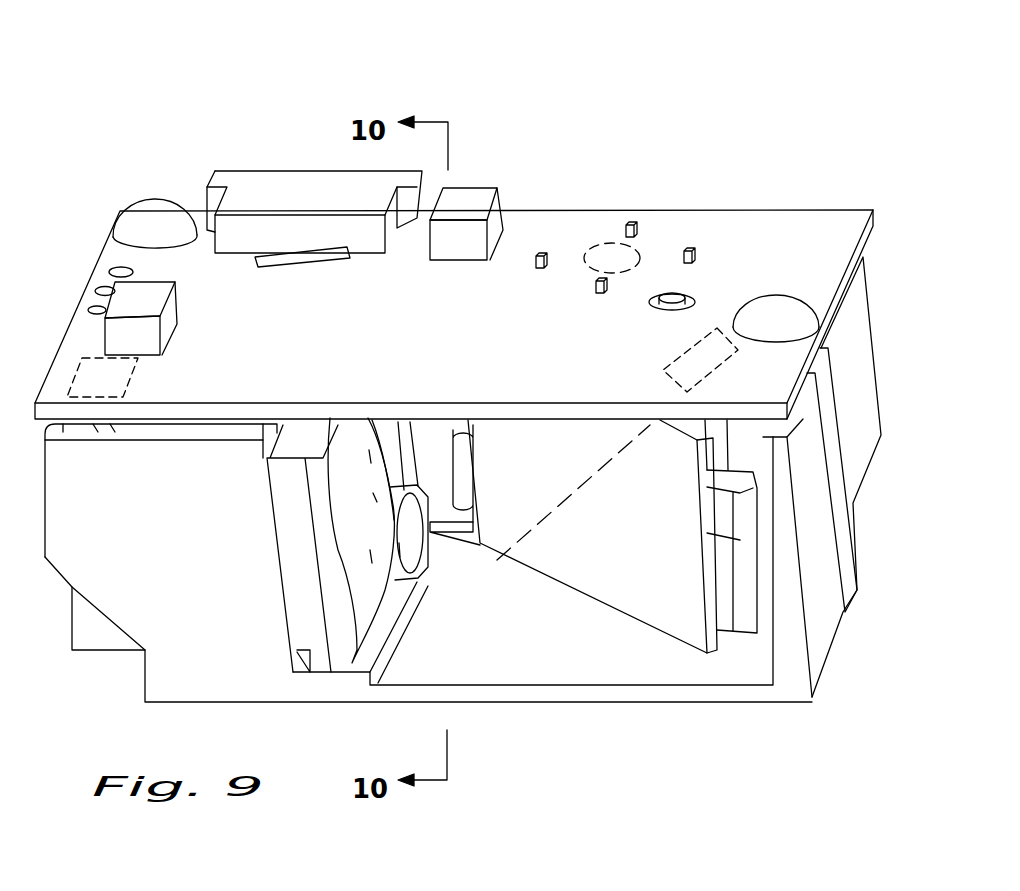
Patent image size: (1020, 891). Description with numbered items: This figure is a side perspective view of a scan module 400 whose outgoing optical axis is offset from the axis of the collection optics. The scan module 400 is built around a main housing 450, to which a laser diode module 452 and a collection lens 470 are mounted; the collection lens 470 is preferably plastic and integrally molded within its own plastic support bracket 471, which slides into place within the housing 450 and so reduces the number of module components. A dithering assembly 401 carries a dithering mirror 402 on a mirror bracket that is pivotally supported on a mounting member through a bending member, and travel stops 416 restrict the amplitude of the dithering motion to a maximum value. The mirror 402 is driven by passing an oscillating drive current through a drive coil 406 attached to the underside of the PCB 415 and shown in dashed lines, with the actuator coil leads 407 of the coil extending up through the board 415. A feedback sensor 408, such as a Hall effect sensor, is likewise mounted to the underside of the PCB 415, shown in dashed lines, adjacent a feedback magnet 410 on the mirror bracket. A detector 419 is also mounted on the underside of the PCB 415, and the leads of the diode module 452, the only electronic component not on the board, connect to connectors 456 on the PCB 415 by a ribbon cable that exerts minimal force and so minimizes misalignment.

The scan module 400 is at (428, 72).
The dithering assembly 401 is at (537, 571).
The dithering mirror 402 is at (598, 533).
The drive coil 406 is at (588, 263).
The actuator coil leads 407 is at (600, 279).
The feedback sensor 408 is at (685, 352).
The feedback magnet 410 is at (690, 435).
The PCB 415 is at (815, 225).
The travel stops 416 is at (727, 513).
The detector 419 is at (128, 381).
The main housing 450 is at (536, 690).
The laser diode module 452 is at (398, 568).
The connectors 456 is at (93, 308).
The collection lens 470 is at (358, 548).
The support bracket 471 is at (292, 525).